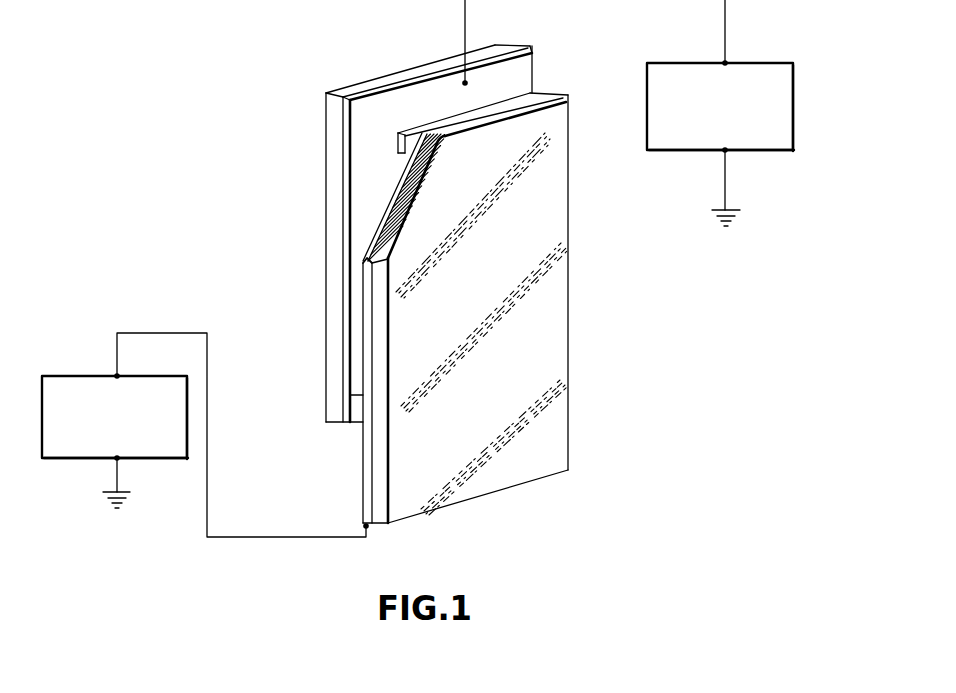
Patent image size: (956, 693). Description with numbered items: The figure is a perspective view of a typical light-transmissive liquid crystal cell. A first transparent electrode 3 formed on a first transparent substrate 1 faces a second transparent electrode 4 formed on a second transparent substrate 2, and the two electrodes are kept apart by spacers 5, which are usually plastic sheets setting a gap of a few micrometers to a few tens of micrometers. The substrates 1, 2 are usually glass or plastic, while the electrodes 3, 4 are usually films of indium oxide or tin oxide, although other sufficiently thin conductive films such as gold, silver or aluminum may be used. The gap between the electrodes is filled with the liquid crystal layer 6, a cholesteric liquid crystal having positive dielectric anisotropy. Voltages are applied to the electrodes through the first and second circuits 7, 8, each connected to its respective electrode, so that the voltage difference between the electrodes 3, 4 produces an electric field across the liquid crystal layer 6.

The first transparent substrate 1 is at (332, 117).
The second transparent substrate 2 is at (550, 133).
The first transparent electrode 3 is at (522, 68).
The second transparent electrode 4 is at (365, 455).
The spacers 5 is at (398, 132).
The liquid crystal layer 6 is at (363, 202).
The first circuit 7 is at (768, 62).
The second circuit 8 is at (66, 376).